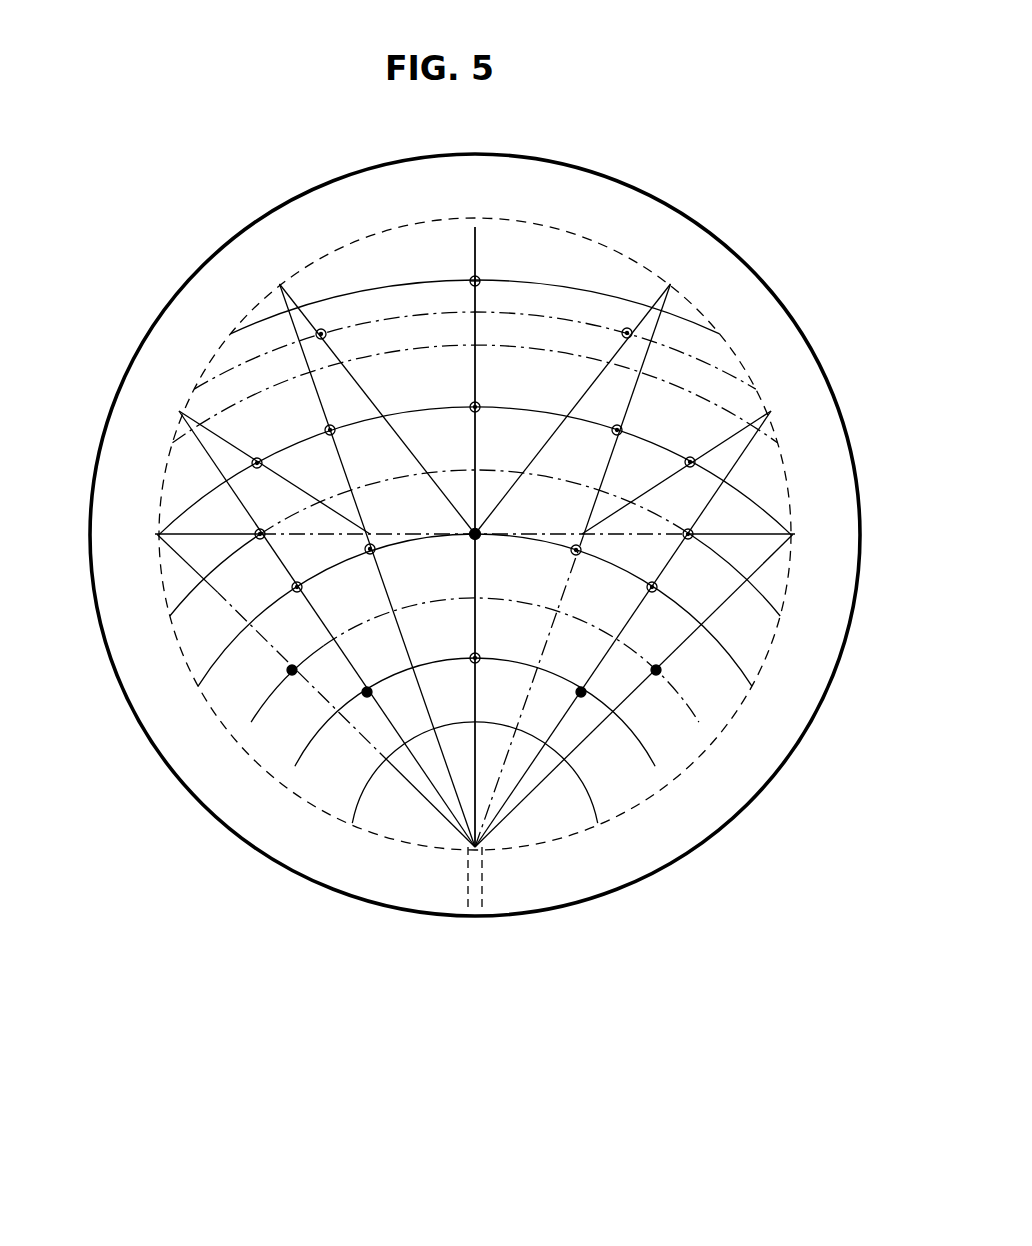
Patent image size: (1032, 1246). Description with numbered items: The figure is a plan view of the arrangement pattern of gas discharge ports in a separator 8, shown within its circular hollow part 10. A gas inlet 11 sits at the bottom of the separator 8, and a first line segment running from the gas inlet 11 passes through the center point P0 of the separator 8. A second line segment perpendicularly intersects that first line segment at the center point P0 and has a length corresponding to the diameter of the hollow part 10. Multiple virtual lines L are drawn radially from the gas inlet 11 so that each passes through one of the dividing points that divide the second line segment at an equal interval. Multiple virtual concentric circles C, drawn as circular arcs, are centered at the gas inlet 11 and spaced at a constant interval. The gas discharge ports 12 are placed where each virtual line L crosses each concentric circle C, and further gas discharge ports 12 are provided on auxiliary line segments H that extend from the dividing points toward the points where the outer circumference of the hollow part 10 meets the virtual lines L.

The separator 8 is at (605, 942).
The hollow part 10 is at (632, 760).
The gas inlet 11 is at (479, 232).
The gas discharge ports 12 is at (321, 330).
The center point P0 is at (487, 529).
The auxiliary line segments H is at (360, 385).
The virtual lines L is at (200, 446).
The virtual concentric circles C is at (250, 724).